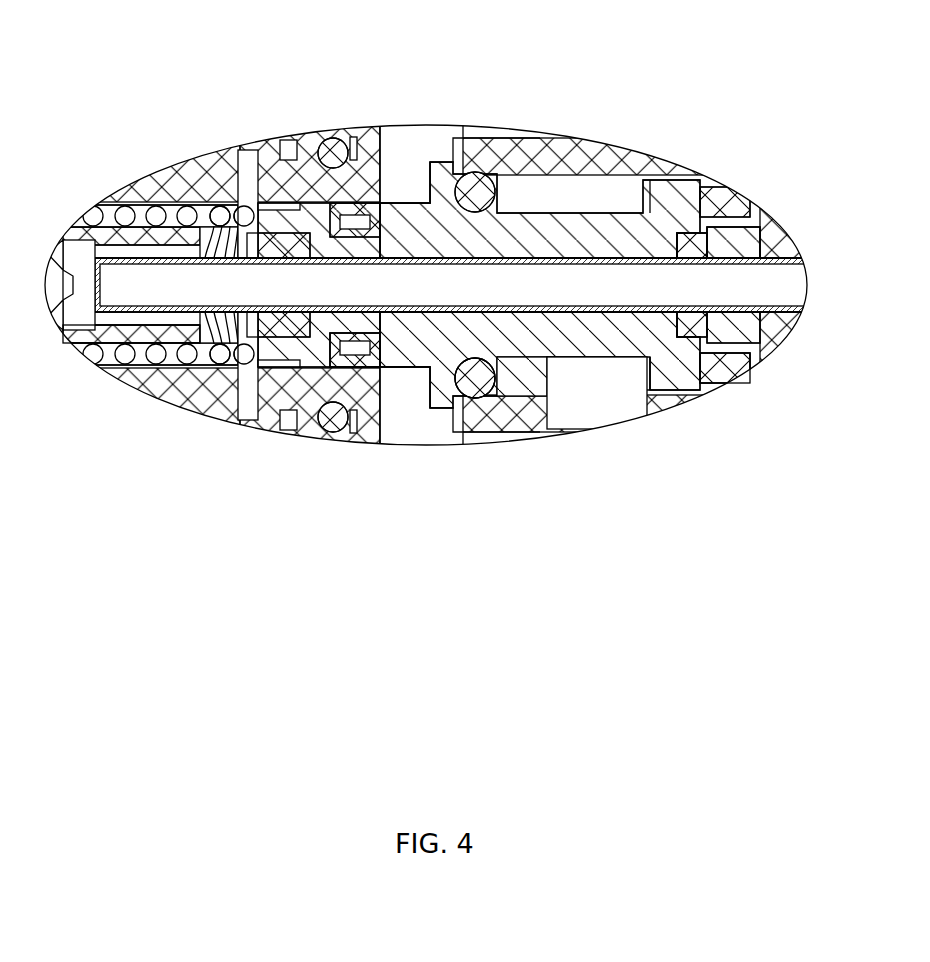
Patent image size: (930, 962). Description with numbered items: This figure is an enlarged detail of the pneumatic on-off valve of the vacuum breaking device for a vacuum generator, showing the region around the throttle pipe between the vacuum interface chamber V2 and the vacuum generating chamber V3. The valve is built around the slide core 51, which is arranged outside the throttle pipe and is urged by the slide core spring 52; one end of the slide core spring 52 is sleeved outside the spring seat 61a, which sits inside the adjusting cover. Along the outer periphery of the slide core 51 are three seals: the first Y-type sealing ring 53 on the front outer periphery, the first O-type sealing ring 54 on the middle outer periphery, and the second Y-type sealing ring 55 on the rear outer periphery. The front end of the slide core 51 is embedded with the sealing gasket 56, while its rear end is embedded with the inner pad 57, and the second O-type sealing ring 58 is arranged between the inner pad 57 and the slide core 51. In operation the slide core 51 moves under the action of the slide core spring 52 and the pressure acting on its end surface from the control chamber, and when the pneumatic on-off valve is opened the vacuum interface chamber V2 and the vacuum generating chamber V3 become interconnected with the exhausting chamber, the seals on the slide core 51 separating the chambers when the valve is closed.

The slide core 51 is at (430, 345).
The slide core spring 52 is at (234, 360).
The first Y-type sealing ring 53 is at (363, 353).
The first O-type sealing ring 54 is at (478, 397).
The second Y-type sealing ring 55 is at (713, 383).
The sealing gasket 56 is at (243, 208).
The inner pad 57 is at (740, 243).
The second O-type sealing ring 58 is at (690, 237).
The spring seat 61a is at (124, 337).
The vacuum interface chamber V2 is at (412, 158).
The vacuum generating chamber V3 is at (577, 383).